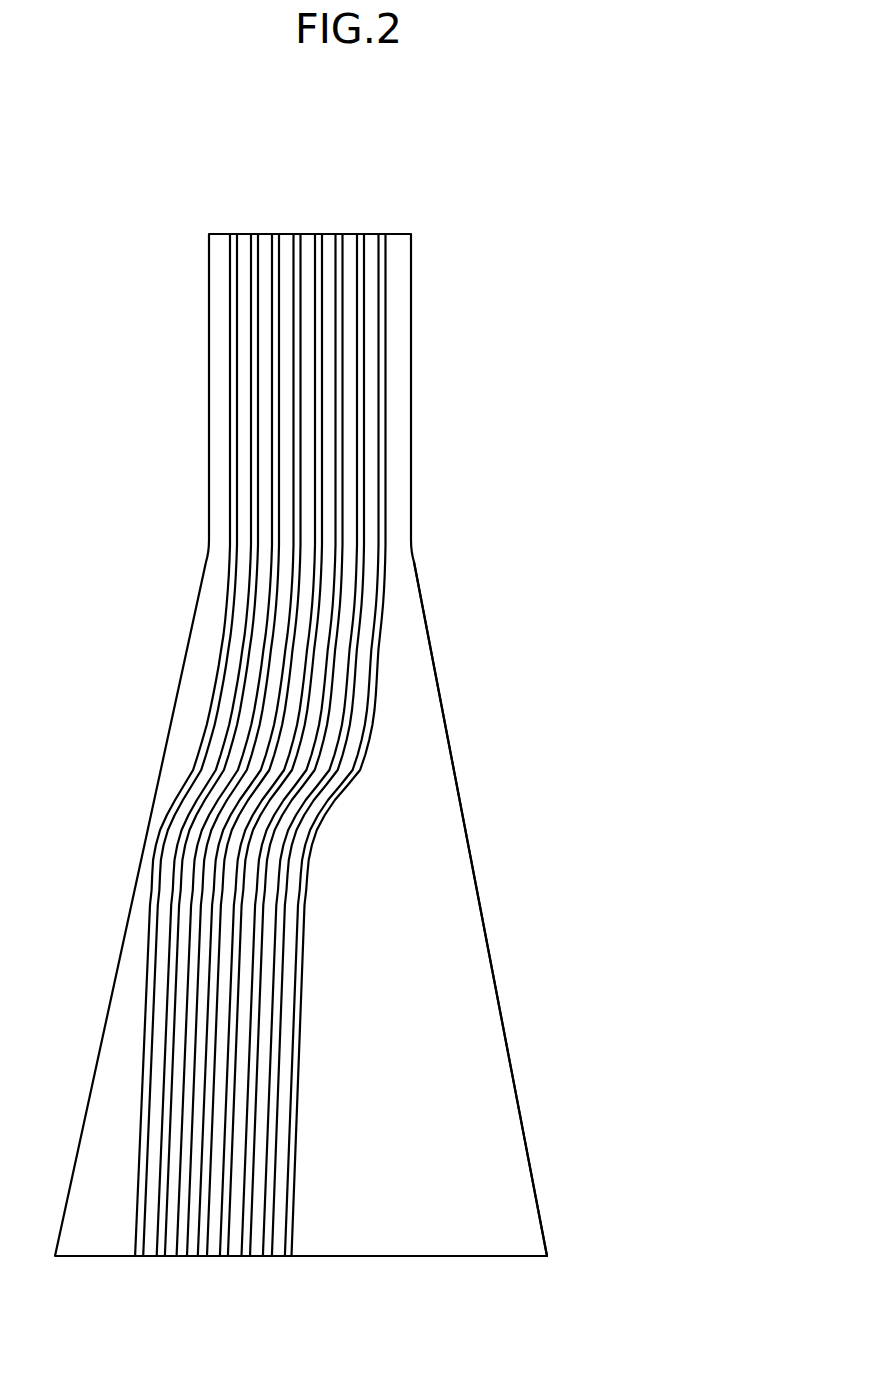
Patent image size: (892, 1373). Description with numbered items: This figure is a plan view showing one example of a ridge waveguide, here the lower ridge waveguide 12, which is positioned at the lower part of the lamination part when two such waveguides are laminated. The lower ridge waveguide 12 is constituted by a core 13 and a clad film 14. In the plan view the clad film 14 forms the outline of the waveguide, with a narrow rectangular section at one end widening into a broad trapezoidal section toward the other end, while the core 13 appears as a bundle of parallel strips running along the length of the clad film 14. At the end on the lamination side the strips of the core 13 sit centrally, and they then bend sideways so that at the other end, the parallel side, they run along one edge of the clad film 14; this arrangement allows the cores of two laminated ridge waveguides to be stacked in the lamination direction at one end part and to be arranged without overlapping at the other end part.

The lower ridge waveguide 12 is at (482, 429).
The core 13 is at (135, 1200).
The clad film 14 is at (445, 1220).